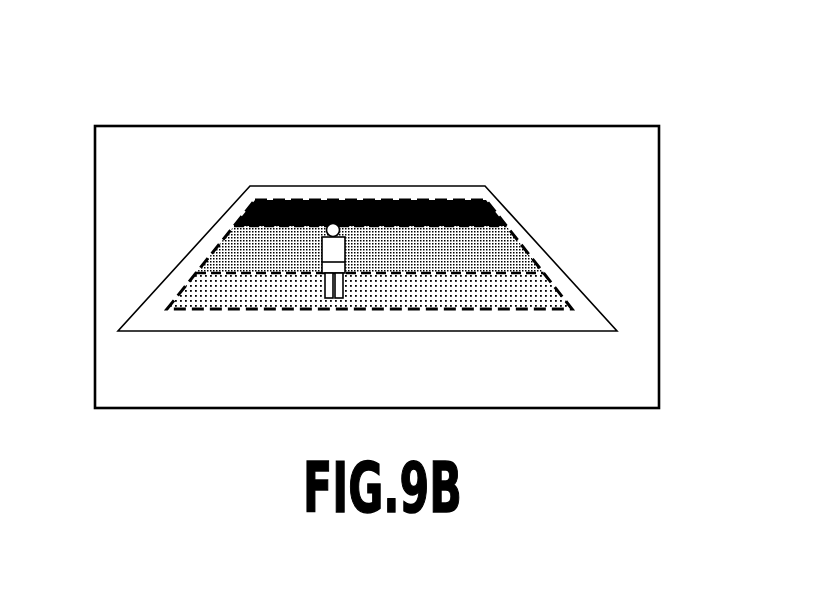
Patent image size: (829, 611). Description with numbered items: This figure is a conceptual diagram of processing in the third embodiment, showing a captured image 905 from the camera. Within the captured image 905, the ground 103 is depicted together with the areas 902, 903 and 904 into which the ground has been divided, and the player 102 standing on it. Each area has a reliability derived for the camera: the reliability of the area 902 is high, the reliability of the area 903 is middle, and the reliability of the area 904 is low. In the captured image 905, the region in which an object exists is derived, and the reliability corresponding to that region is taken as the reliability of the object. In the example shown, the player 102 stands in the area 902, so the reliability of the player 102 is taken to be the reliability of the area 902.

The captured image 905 is at (592, 125).
The ground 103 is at (400, 186).
The player 102 is at (331, 225).
The area 904 is at (497, 204).
The area 903 is at (523, 238).
The area 902 is at (555, 280).